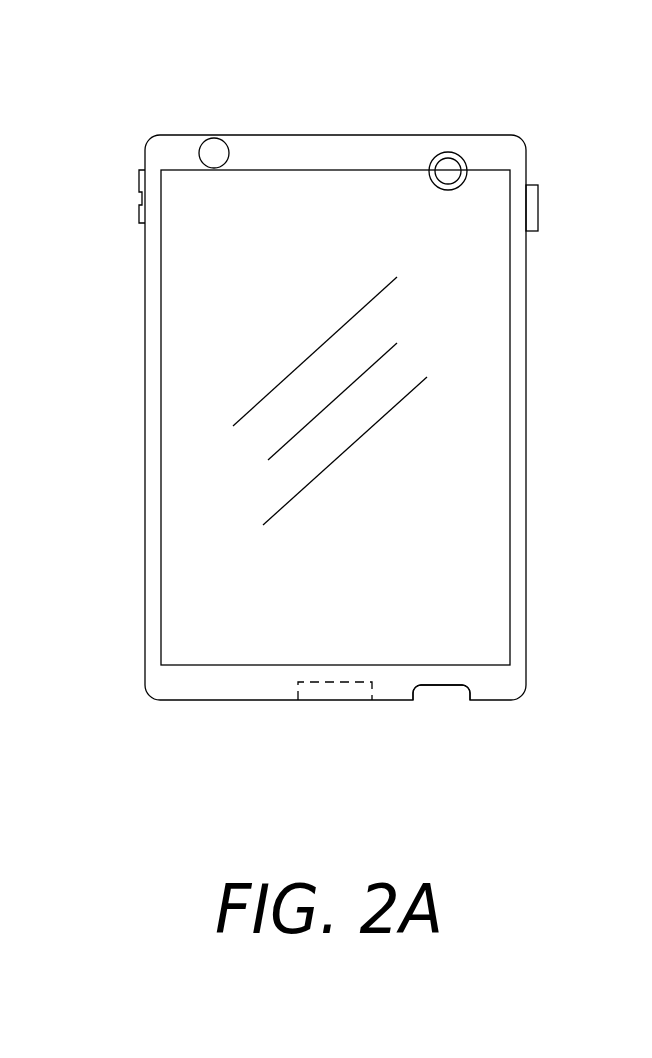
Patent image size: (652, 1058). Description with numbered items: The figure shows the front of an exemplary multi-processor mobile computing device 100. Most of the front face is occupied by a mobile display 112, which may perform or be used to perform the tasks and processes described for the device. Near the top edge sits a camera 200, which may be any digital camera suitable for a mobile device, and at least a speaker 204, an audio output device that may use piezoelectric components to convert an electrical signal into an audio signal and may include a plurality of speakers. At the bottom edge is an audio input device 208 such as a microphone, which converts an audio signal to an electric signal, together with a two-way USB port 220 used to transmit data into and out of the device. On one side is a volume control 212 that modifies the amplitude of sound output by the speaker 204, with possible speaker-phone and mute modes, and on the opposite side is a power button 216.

The multi-processor mobile computing device 100 is at (220, 86).
The mobile display 112 is at (452, 392).
The camera 200 is at (448, 171).
The speaker 204 is at (214, 153).
The audio input device 208 is at (447, 702).
The volume control 212 is at (139, 188).
The power button 216 is at (538, 195).
The two-way USB port 220 is at (337, 702).